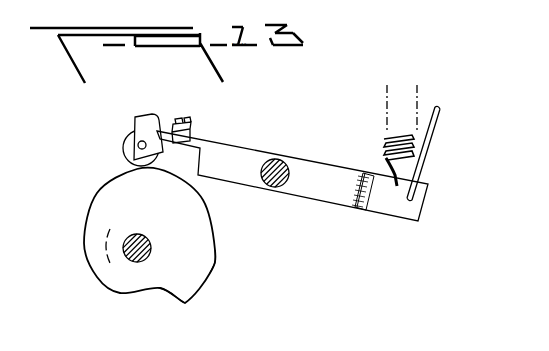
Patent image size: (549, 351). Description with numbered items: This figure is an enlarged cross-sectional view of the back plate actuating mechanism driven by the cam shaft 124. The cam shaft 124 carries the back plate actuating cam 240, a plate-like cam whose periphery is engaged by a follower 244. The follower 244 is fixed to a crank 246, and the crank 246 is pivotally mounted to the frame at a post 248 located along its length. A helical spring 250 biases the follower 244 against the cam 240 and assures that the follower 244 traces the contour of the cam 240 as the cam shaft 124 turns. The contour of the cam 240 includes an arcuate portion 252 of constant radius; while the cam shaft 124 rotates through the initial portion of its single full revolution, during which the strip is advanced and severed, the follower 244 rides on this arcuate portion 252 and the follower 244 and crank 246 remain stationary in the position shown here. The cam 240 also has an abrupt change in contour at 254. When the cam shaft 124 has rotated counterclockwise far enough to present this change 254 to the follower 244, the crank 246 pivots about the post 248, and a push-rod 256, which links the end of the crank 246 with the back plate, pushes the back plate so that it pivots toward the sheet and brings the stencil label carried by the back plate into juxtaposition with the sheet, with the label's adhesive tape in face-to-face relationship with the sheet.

The cam shaft 124 is at (142, 232).
The back plate actuating cam 240 is at (203, 223).
The follower 244 is at (127, 143).
The crank 246 is at (230, 152).
The post 248 is at (270, 163).
The helical spring 250 is at (385, 142).
The arcuate portion 252 is at (215, 257).
The abrupt change in contour 254 is at (153, 297).
The push-rod 256 is at (423, 165).